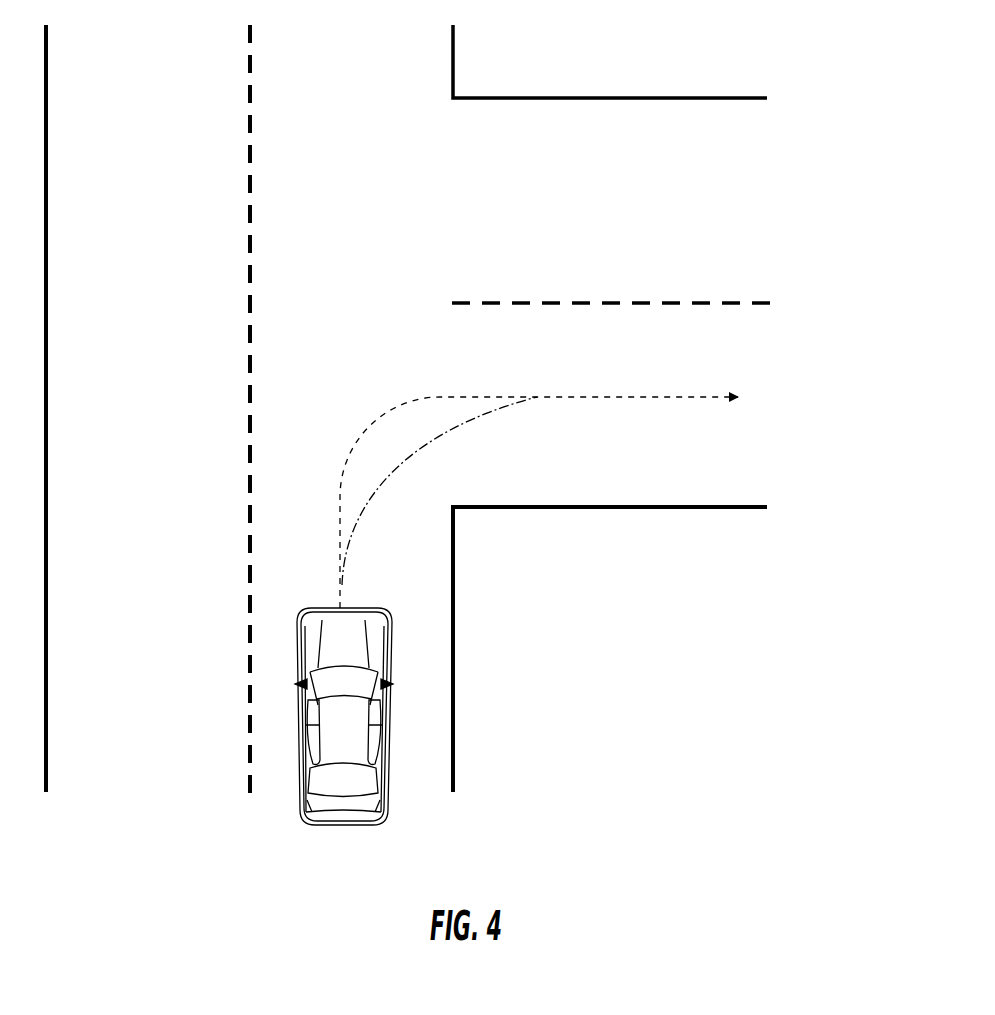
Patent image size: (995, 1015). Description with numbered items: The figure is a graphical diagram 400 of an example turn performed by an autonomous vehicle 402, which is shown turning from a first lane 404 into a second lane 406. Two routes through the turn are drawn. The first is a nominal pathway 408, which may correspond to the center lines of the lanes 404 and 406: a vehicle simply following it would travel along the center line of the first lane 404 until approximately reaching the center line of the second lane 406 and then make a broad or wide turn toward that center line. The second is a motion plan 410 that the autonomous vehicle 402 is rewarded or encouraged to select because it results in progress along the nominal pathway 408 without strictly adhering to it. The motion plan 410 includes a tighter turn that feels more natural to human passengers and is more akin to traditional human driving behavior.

The graphical diagram 400 is at (802, 136).
The autonomous vehicle 402 is at (300, 628).
The first lane 404 is at (416, 788).
The second lane 406 is at (767, 454).
The nominal pathway 408 is at (407, 406).
The motion plan 410 is at (448, 430).